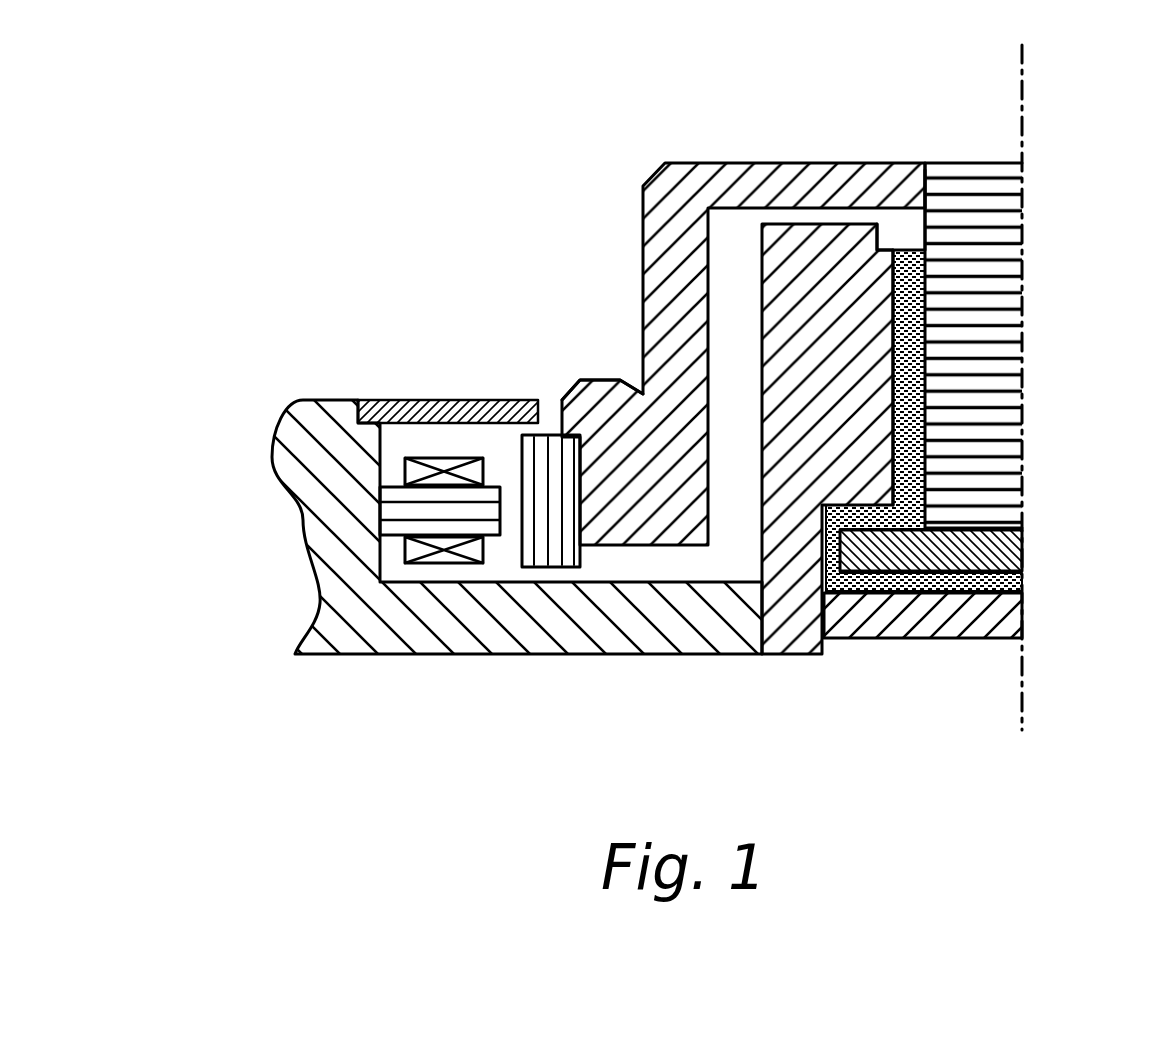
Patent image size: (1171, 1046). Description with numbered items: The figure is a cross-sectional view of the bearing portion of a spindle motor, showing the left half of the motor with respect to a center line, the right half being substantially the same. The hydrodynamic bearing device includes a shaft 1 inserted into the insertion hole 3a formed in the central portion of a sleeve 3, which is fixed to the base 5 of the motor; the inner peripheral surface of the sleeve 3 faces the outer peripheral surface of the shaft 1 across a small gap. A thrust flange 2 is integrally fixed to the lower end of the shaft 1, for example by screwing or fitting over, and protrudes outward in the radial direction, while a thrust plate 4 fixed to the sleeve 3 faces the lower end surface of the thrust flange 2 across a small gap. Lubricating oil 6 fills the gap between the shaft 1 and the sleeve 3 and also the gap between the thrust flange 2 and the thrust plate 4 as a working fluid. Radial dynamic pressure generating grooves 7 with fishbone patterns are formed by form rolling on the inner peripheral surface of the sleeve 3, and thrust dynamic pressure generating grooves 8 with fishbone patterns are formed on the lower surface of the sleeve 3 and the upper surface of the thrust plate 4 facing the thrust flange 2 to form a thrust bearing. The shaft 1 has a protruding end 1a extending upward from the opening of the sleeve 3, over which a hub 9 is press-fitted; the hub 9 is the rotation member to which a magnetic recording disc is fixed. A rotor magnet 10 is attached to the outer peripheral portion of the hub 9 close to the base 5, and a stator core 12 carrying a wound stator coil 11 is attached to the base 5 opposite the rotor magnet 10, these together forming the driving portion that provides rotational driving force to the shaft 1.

The shaft 1 is at (1010, 267).
The protruding end 1a is at (953, 177).
The thrust flange 2 is at (1020, 555).
The sleeve 3 is at (758, 333).
The insertion hole 3a is at (883, 373).
The thrust plate 4 is at (1015, 615).
The base 5 is at (370, 617).
The lubricating oil 6 is at (920, 243).
The radial dynamic pressure generating grooves 7 is at (934, 442).
The thrust dynamic pressure generating grooves 8 is at (840, 601).
The hub 9 is at (673, 362).
The rotor magnet 10 is at (555, 550).
The stator coil 11 is at (443, 565).
The stator core 12 is at (397, 527).